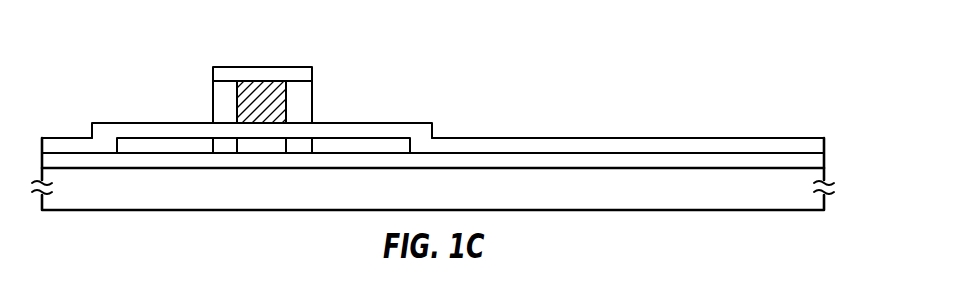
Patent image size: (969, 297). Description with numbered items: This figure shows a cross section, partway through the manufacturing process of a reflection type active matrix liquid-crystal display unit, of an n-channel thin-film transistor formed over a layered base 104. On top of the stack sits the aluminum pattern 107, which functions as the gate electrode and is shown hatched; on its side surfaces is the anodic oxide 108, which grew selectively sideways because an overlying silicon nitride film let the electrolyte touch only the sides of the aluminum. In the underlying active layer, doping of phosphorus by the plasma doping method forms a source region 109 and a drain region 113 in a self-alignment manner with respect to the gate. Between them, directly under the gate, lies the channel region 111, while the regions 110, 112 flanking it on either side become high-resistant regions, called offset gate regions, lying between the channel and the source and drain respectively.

The substrate 104 is at (525, 147).
The aluminum pattern 107 is at (255, 92).
The anodic oxide 108 is at (302, 93).
The source region 109 is at (137, 143).
The offset gate region 110 is at (221, 145).
The channel region 111 is at (258, 146).
The offset gate region 112 is at (301, 146).
The drain region 113 is at (387, 145).